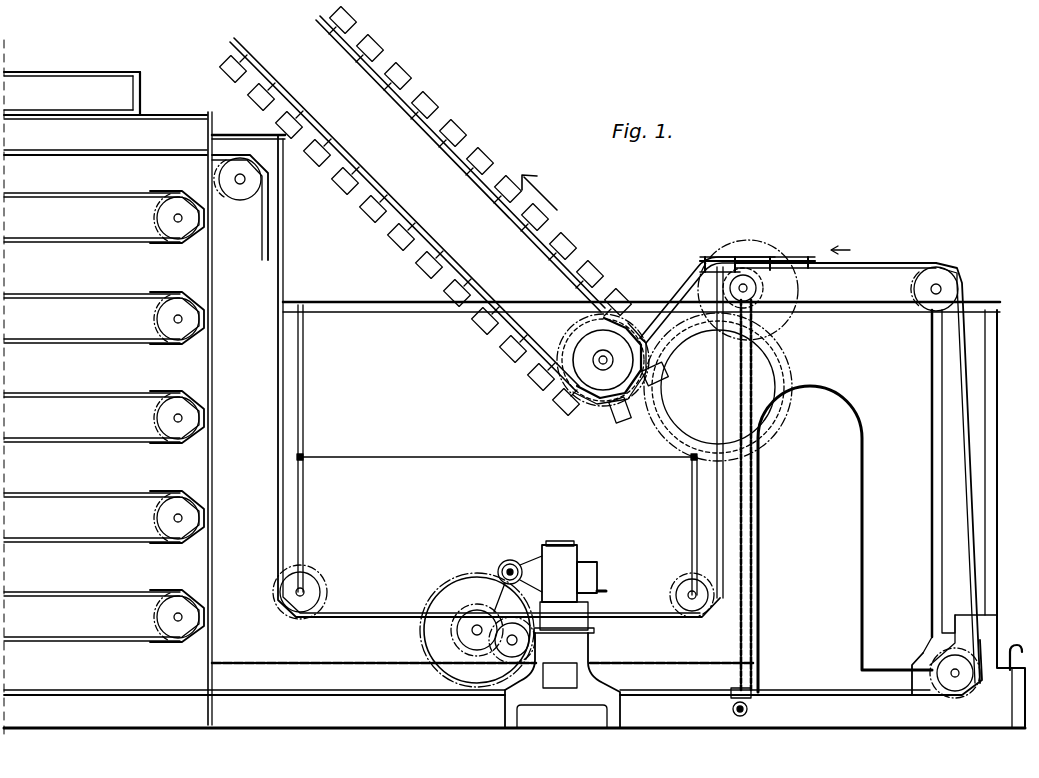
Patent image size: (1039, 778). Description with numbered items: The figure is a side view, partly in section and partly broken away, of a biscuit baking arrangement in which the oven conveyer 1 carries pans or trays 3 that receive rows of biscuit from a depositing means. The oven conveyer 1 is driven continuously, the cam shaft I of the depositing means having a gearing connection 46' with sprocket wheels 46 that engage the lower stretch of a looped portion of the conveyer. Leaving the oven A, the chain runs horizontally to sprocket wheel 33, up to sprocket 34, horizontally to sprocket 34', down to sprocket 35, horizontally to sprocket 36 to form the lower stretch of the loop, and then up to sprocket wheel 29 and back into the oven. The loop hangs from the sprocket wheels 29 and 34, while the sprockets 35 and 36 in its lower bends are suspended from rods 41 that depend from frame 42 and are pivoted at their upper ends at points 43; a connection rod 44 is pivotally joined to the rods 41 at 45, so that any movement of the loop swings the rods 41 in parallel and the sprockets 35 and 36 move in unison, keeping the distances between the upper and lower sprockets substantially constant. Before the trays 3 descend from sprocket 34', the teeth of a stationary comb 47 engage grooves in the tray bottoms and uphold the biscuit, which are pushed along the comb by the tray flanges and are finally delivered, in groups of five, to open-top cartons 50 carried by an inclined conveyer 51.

The oven A is at (86, 80).
The oven conveyer 1 is at (348, 612).
The pans or trays 3 is at (782, 263).
The sprocket wheel 29 is at (258, 190).
The sprocket wheel 33 is at (950, 676).
The sprocket 34 is at (945, 458).
The sprocket 34' is at (760, 269).
The sprocket 35 is at (684, 586).
The sprocket 36 is at (310, 580).
The rods 41 is at (303, 410).
The frame 42 is at (381, 313).
The pivot points 43 is at (303, 307).
The connection rod 44 is at (497, 440).
The pivot points 45 is at (302, 458).
The sprocket wheels 46 is at (483, 662).
The gearing connection 46' is at (474, 612).
The biscuit removal device or comb 47 is at (723, 262).
The open-top cartons 50 is at (640, 306).
The conveyer 51 is at (452, 259).
The cam shaft I is at (505, 562).